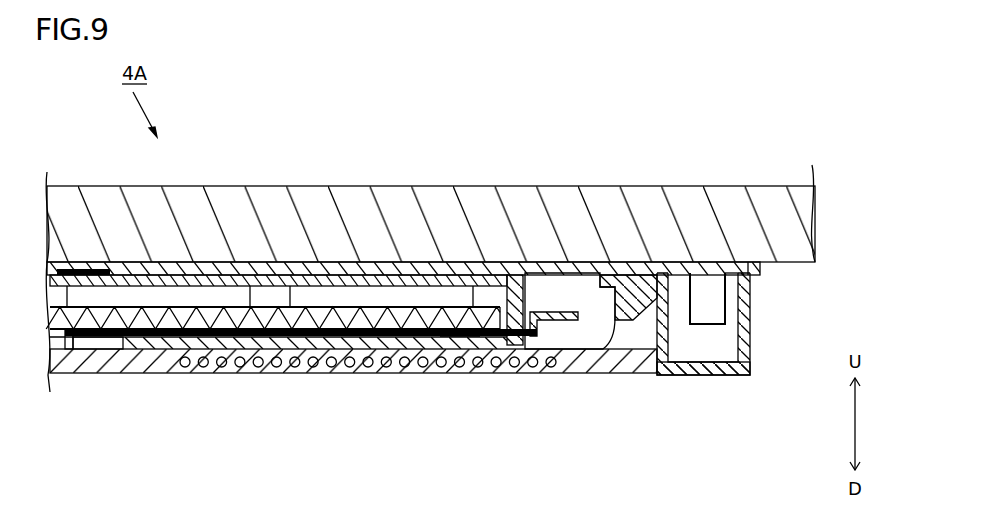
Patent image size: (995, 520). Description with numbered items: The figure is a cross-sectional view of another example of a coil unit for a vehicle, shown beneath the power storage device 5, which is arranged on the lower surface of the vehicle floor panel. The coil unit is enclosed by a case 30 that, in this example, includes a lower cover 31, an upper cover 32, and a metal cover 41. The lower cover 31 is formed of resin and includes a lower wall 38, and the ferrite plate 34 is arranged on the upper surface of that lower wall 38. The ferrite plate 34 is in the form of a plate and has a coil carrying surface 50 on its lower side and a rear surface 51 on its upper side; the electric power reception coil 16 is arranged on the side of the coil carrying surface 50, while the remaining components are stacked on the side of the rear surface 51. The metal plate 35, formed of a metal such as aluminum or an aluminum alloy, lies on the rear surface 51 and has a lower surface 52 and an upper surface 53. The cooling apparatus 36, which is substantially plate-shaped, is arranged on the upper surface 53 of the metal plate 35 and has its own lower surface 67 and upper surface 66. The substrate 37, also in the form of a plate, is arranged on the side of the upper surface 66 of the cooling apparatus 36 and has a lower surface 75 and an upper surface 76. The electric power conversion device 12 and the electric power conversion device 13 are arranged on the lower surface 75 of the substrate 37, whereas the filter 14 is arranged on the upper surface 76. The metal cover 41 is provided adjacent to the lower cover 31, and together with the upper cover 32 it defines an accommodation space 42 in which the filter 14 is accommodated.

The power storage device 5 is at (573, 205).
The electric power conversion device 12 is at (233, 297).
The electric power conversion device 13 is at (303, 297).
The filter 14 is at (695, 287).
The electric power reception coil 16 is at (185, 367).
The case 30 is at (692, 287).
The lower cover 31 is at (626, 370).
The upper cover 32 is at (681, 277).
The ferrite plate 34 is at (353, 400).
The metal plate 35 is at (278, 387).
The cooling apparatus 36 is at (291, 386).
The substrate 37 is at (403, 179).
The lower wall 38 is at (557, 351).
The metal cover 41 is at (516, 347).
The accommodation space 42 is at (731, 287).
The coil carrying surface 50 is at (416, 351).
The rear surface 51 is at (453, 333).
The lower surface 52 is at (310, 337).
The upper surface 53 is at (348, 328).
The upper surface 66 is at (278, 306).
The lower surface 67 is at (228, 334).
The lower surface 75 is at (447, 286).
The upper surface 76 is at (398, 274).